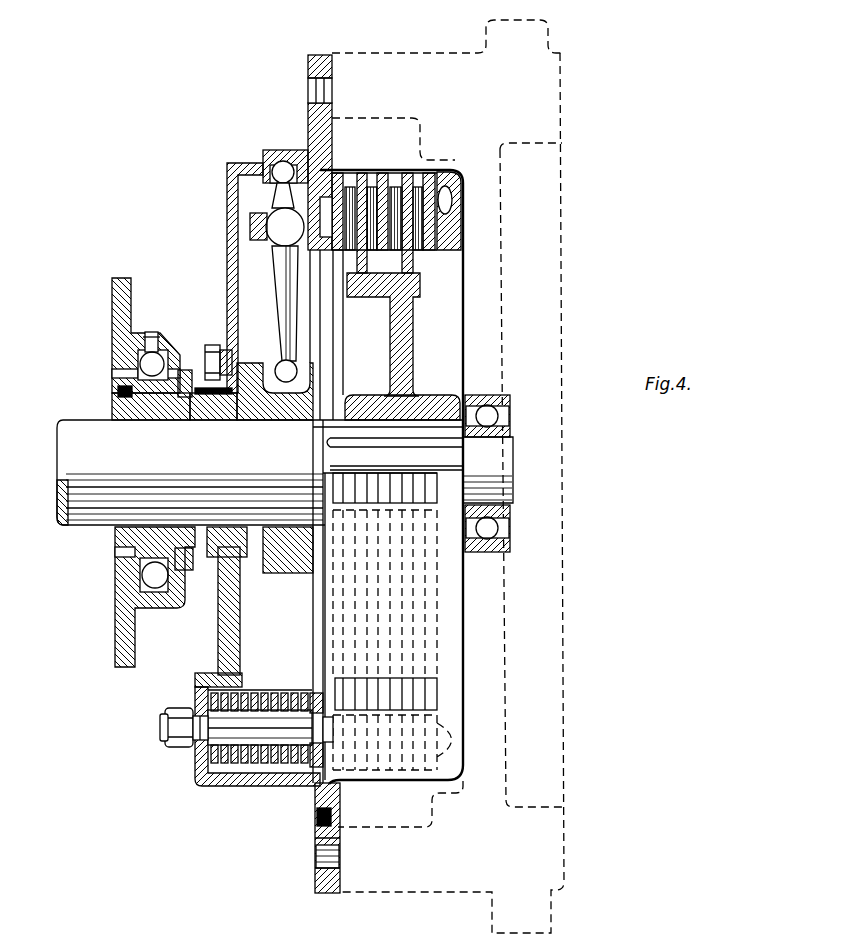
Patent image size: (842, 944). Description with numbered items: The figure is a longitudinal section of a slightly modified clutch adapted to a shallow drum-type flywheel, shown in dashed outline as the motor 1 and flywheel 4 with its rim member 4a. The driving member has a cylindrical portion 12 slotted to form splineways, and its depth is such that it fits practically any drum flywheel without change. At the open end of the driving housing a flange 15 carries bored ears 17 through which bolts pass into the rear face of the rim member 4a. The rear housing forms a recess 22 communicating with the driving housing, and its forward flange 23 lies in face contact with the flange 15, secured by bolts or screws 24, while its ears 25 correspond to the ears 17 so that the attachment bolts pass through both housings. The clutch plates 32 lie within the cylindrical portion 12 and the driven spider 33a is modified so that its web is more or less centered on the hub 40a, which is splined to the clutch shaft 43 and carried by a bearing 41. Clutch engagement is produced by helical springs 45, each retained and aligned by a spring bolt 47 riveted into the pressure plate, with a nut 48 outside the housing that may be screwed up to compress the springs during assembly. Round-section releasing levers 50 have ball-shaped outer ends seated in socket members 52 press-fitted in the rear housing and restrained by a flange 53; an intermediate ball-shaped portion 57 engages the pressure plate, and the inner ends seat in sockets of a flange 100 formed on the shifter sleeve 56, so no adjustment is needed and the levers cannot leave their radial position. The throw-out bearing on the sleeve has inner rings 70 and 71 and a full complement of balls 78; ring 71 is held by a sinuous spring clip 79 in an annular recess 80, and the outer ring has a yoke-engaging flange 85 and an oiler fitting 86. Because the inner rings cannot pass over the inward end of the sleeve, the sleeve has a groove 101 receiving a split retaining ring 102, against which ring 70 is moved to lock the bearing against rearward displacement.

The motor 1 is at (482, 625).
The motor frame 4 is at (543, 100).
The flywheel rim member 4a is at (438, 54).
The cylindrical portion 12 is at (362, 172).
The flange 15 is at (338, 841).
The ears 17 is at (325, 56).
The space or recess 22 is at (323, 626).
The flange 23 is at (313, 833).
The bolts or screws 24 is at (340, 815).
The ears 25 is at (308, 66).
The clutch plates 32 is at (417, 255).
The driven spider 33a is at (405, 345).
The hub 40a is at (440, 395).
The ball bearing 41 is at (511, 432).
The clutch shaft 43 is at (100, 500).
The helical springs 45 is at (270, 692).
The spring bolt 47 is at (200, 770).
The nut 48 is at (181, 738).
The releasing levers 50 is at (290, 293).
The socket member 52 is at (273, 150).
The flange 53 is at (262, 180).
The shifter sleeve 56 is at (240, 400).
The ball shaped portion 57 is at (275, 233).
The inner ring 70 is at (114, 384).
The inner ring 71 is at (188, 368).
The balls 78 is at (150, 580).
The spring clip 79 is at (192, 370).
The annular recess 80 is at (202, 398).
The flange 85 is at (120, 626).
The oiler fitting 86 is at (152, 332).
The flange 100 is at (262, 370).
The annular groove 101 is at (132, 398).
The split retaining ring 102 is at (118, 394).